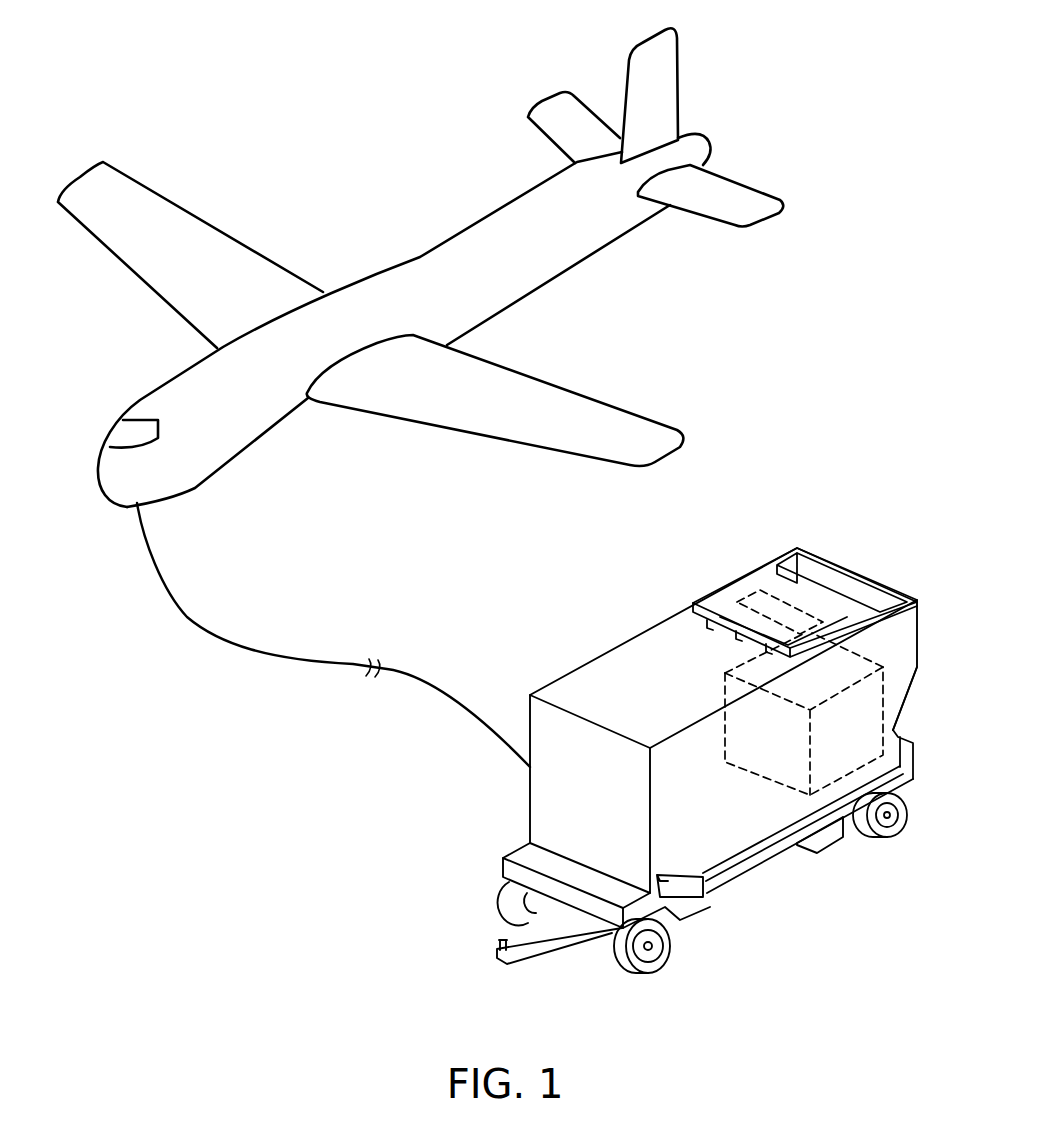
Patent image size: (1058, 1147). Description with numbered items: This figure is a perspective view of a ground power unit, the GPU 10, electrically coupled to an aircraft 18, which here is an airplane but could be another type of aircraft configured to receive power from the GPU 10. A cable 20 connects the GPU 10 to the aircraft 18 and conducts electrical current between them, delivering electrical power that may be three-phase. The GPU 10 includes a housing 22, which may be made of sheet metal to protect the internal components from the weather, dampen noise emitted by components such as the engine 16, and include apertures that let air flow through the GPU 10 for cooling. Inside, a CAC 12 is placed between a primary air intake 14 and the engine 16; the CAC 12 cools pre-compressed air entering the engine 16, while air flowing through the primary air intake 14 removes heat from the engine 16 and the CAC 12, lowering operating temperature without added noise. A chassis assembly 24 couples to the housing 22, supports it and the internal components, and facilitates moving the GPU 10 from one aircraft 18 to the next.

The GPU 10 is at (596, 637).
The CAC 12 is at (778, 610).
The primary air intake 14 is at (735, 602).
The engine 16 is at (897, 777).
The aircraft 18 is at (410, 263).
The cable 20 is at (303, 663).
The housing 22 is at (897, 728).
The chassis assembly 24 is at (755, 872).